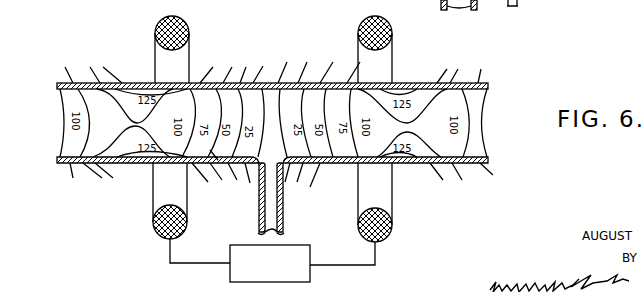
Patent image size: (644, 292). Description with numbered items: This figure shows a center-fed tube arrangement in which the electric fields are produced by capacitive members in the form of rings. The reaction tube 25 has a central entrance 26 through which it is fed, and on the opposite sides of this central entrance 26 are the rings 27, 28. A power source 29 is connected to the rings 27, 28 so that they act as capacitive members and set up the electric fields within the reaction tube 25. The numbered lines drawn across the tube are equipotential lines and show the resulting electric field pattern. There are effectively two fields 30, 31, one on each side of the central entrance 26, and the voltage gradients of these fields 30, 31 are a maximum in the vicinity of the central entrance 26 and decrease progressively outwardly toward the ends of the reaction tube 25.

The reaction tube 25 is at (338, 148).
The central entrance 26 is at (289, 219).
The ring 27 is at (155, 26).
The ring 28 is at (358, 30).
The power source 29 is at (230, 278).
The field 30 is at (191, 201).
The field 31 is at (375, 202).